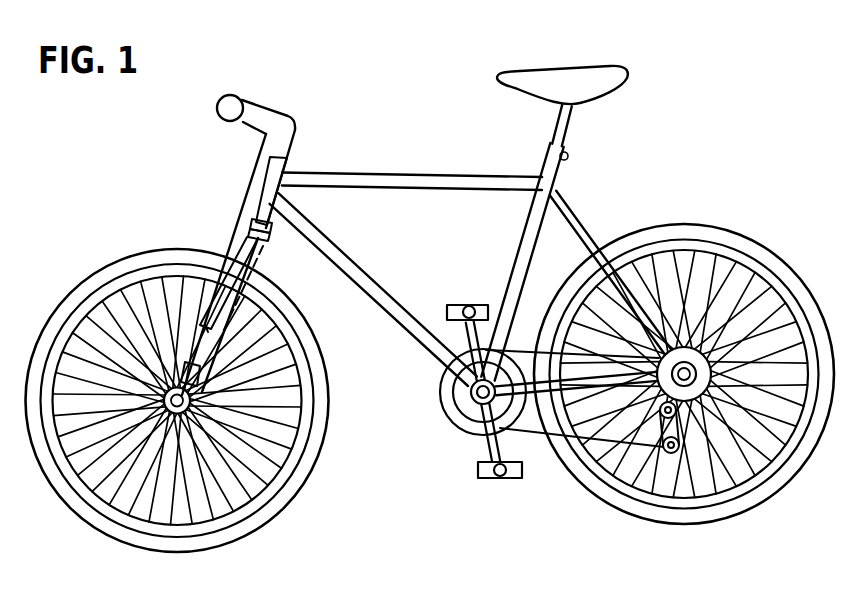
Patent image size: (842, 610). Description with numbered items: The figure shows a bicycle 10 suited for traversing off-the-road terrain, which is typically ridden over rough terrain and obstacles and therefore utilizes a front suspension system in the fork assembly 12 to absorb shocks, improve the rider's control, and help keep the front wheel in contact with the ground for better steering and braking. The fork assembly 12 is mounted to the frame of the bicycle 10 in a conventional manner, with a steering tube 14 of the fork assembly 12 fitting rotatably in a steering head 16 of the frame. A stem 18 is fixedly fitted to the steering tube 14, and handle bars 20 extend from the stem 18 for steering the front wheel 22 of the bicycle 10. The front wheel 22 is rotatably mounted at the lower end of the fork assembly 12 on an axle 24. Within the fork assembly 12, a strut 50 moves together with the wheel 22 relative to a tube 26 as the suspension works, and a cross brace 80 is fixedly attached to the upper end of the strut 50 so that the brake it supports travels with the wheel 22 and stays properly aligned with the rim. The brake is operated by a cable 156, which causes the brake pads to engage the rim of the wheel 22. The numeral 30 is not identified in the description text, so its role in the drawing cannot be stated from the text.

The bicycle 10 is at (140, 197).
The fork assembly 12 is at (178, 333).
The steering tube 14 is at (278, 228).
The steering head 16 is at (270, 171).
The stem 18 is at (282, 115).
The handle bars 20 is at (216, 110).
The front wheel 22 is at (74, 281).
The axle 24 is at (84, 313).
The tube 26 is at (262, 262).
The head bearing 30 is at (271, 238).
The strut 50 is at (200, 392).
The cross brace 80 is at (233, 247).
The cable 156 is at (246, 199).